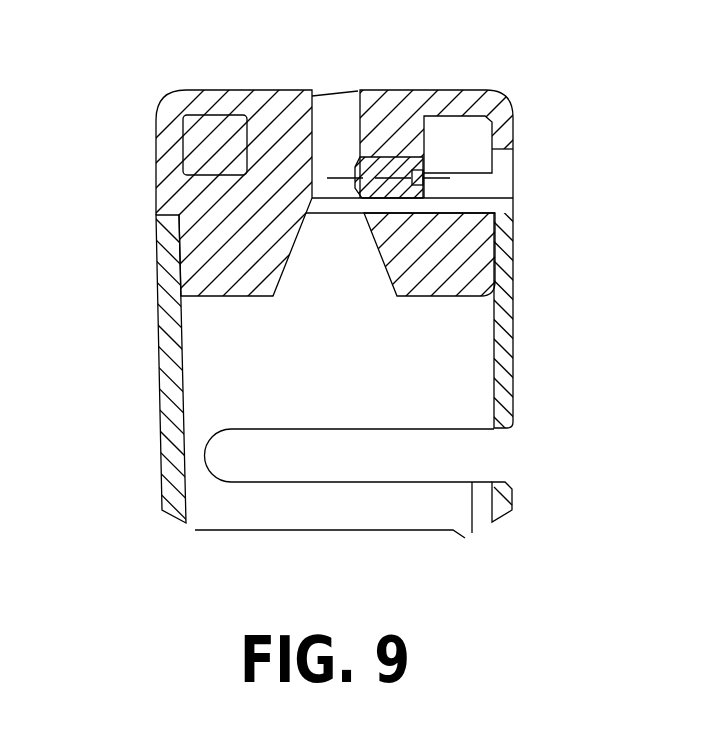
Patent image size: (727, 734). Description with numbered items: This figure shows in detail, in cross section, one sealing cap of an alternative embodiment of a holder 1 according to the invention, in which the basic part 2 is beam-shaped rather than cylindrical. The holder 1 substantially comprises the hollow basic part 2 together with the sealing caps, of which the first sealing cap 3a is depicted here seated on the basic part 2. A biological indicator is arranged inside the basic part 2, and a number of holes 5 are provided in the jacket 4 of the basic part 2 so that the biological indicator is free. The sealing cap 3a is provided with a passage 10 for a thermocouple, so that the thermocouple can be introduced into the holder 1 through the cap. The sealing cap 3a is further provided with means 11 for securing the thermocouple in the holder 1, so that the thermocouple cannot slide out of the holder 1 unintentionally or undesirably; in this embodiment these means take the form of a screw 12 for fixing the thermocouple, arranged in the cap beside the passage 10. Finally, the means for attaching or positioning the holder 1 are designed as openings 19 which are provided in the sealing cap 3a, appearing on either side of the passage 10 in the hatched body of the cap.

The holder 1 is at (101, 97).
The basic part 2 is at (210, 370).
The first sealing cap 3a is at (168, 170).
The jacket 4 is at (498, 495).
The holes 5 is at (450, 448).
The passage 10 is at (347, 128).
The means for securing the thermocouple 11 is at (389, 64).
The screw 12 is at (410, 163).
The openings 19 is at (223, 140).